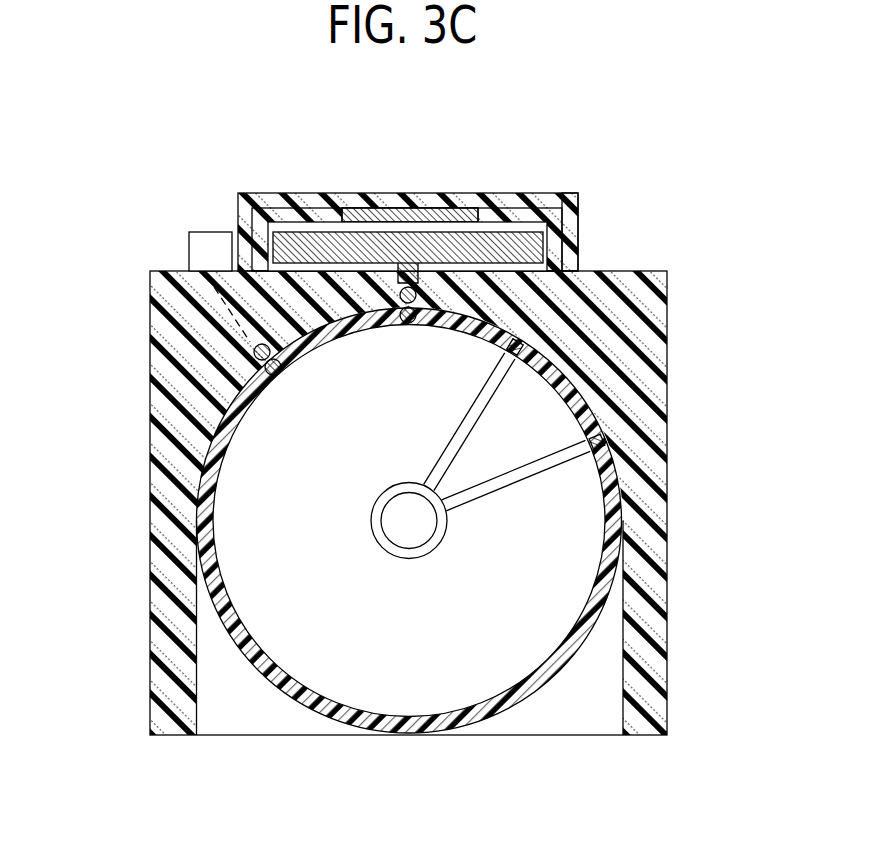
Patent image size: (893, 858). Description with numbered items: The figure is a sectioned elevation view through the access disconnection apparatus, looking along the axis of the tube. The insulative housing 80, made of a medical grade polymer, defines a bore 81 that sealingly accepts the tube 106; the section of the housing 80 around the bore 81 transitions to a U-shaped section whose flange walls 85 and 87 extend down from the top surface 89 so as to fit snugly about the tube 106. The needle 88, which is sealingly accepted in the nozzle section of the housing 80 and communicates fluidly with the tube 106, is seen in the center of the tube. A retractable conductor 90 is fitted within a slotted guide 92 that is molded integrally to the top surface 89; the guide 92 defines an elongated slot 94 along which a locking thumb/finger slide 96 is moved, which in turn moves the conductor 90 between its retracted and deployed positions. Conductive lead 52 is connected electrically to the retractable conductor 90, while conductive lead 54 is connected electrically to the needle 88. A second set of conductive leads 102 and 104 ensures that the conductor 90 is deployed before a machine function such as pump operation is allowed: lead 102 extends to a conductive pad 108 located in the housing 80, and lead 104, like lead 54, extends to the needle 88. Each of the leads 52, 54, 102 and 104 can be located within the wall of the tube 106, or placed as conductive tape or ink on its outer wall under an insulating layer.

The insulative housing 80 is at (165, 270).
The bore 81 is at (545, 692).
The flange wall 85 is at (667, 480).
The flange wall 87 is at (150, 515).
The needle 88 is at (420, 558).
The top surface 89 is at (630, 271).
The retractable conductor 90 is at (390, 240).
The slotted guide 92 is at (573, 232).
The elongated slot 94 is at (478, 193).
The locking thumb/finger slide 96 is at (523, 193).
The conductive lead 102 is at (280, 376).
The conductive lead 104 is at (520, 357).
The tube 106 is at (208, 546).
The conductive pad 108 is at (212, 232).
The conductive lead 52 is at (400, 302).
The conductive lead 54 is at (513, 482).